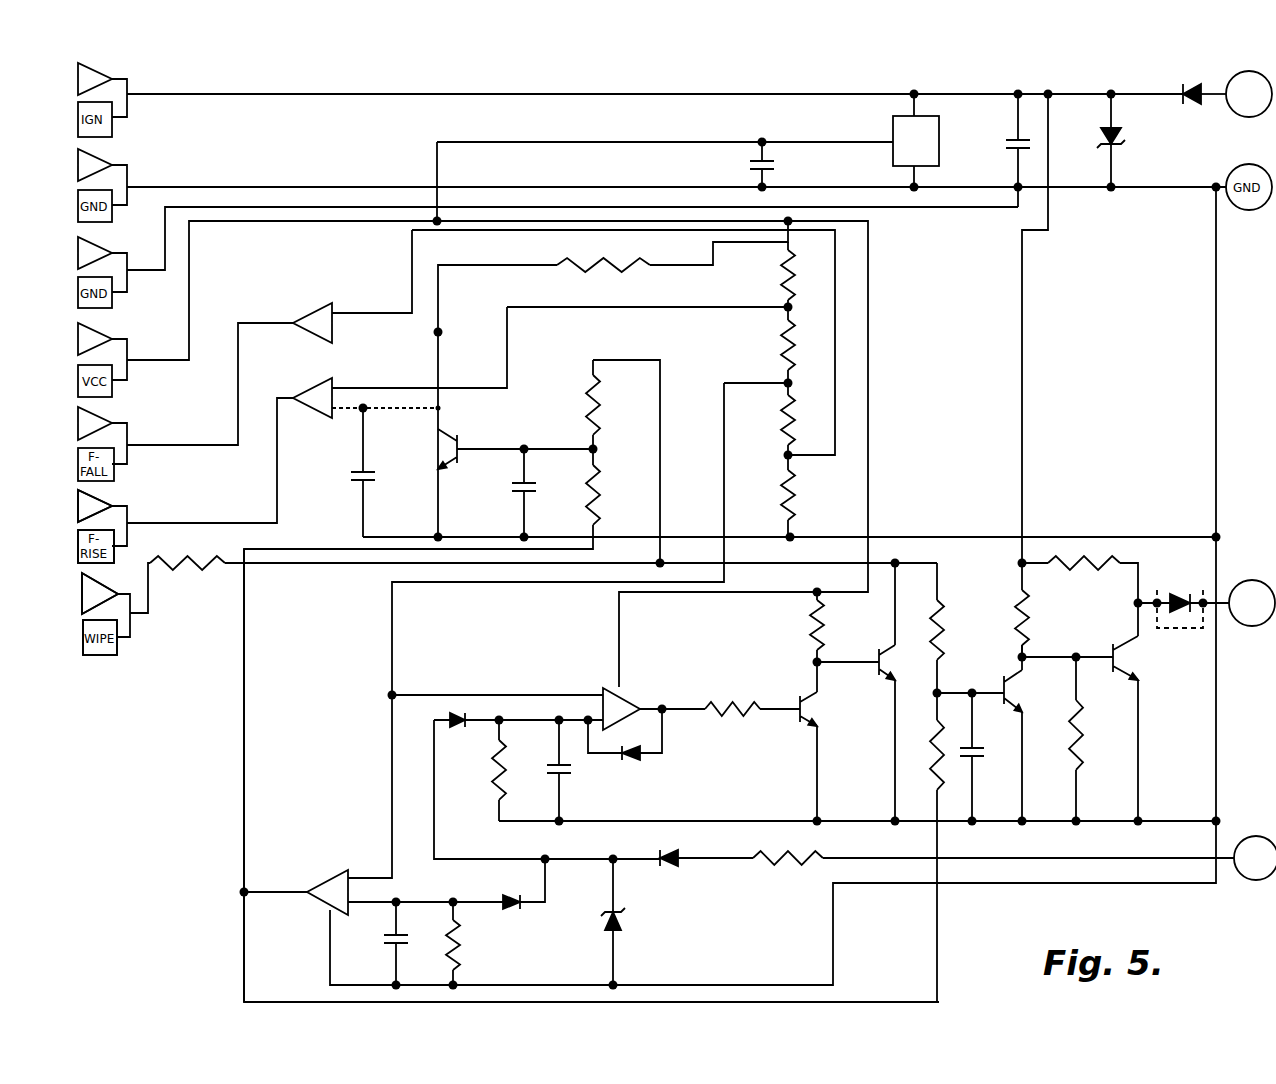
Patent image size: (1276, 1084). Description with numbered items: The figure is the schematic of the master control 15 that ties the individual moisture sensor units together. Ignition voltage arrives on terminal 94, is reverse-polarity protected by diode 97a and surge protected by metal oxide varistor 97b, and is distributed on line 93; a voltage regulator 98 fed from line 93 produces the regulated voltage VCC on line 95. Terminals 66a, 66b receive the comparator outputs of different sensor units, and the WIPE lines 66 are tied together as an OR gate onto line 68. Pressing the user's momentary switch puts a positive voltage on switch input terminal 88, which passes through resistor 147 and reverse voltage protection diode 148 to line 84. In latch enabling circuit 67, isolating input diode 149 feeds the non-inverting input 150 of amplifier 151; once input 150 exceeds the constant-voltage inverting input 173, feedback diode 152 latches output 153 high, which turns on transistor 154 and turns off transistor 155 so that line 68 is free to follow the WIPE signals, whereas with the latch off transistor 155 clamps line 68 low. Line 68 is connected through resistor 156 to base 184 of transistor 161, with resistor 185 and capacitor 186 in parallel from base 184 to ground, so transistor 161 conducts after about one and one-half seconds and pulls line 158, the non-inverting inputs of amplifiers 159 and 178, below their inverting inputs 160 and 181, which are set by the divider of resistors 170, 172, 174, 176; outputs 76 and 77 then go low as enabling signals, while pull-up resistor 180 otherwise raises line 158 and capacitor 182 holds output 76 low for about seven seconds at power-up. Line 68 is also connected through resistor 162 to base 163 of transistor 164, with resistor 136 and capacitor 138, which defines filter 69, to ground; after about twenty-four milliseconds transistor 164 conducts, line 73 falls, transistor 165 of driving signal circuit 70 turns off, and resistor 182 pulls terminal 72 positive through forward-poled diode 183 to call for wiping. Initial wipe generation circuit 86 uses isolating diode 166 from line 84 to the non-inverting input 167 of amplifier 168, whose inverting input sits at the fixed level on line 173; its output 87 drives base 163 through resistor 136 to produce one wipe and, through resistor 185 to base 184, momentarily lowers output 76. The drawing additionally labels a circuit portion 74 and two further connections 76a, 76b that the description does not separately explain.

The master control 15 is at (1071, 328).
The WIPE outputs 66 is at (140, 620).
The terminal 66a is at (83, 600).
The terminal 66b is at (122, 650).
The latch enabling circuit 67 is at (729, 623).
The line 68 is at (316, 567).
The filter 69 is at (1000, 733).
The driving signal circuit 70 is at (1172, 663).
The terminal 72 is at (1247, 628).
The line 73 is at (1049, 656).
The reference stage 74 is at (467, 358).
The output 76 is at (244, 521).
The F-RISE buffer 76a is at (111, 504).
The F-RISE terminal 76b is at (122, 560).
The output 77 is at (238, 406).
The line 84 is at (436, 827).
The initial wipe generation circuit 86 is at (288, 934).
The output 87 is at (246, 713).
The switch input terminal 88 is at (1253, 836).
The line 93 is at (204, 97).
The terminal 94 is at (1249, 118).
The line 95 is at (187, 338).
The diode 97a is at (1197, 107).
The metal oxide varistor 97b is at (1104, 145).
The voltage regulator 98 is at (939, 145).
The resistor 136 is at (935, 775).
The capacitor 138 is at (982, 760).
The resistor 147 is at (770, 872).
The reverse voltage protection diode 148 is at (678, 855).
The isolating input diode 149 is at (460, 712).
The non-inverting input 150 is at (526, 712).
The amplifier 151 is at (627, 689).
The diode 152 is at (641, 758).
The output 153 is at (727, 705).
The transistor 154 is at (795, 737).
The transistor 155 is at (882, 675).
The resistor 156 is at (593, 414).
The line 158 is at (441, 302).
The amplifier 159 is at (310, 392).
The inverting input 160 is at (584, 309).
The transistor 161 is at (470, 470).
The resistor 162 is at (942, 604).
The base 163 is at (990, 690).
The transistor 164 is at (1014, 672).
The transistor 165 is at (1120, 688).
The isolating diode 166 is at (511, 913).
The non-inverting input 167 is at (417, 898).
The amplifier 168 is at (333, 870).
The resistor 170 is at (800, 488).
The resistor 172 is at (790, 418).
The inverting input 173 is at (395, 634).
The resistor 174 is at (787, 345).
The resistor 176 is at (786, 281).
The amplifier 178 is at (304, 316).
The pull-up resistor 180 is at (646, 268).
The inverting input 181 is at (497, 233).
The resistor 182 is at (372, 478).
The forward-poled diode 183 is at (1180, 596).
The base 184 is at (475, 447).
The resistor 185 is at (598, 473).
The capacitor 186 is at (536, 481).